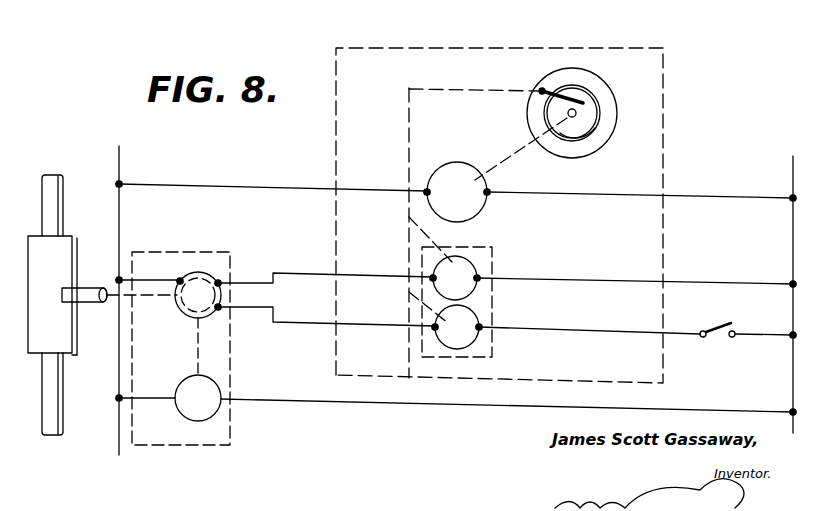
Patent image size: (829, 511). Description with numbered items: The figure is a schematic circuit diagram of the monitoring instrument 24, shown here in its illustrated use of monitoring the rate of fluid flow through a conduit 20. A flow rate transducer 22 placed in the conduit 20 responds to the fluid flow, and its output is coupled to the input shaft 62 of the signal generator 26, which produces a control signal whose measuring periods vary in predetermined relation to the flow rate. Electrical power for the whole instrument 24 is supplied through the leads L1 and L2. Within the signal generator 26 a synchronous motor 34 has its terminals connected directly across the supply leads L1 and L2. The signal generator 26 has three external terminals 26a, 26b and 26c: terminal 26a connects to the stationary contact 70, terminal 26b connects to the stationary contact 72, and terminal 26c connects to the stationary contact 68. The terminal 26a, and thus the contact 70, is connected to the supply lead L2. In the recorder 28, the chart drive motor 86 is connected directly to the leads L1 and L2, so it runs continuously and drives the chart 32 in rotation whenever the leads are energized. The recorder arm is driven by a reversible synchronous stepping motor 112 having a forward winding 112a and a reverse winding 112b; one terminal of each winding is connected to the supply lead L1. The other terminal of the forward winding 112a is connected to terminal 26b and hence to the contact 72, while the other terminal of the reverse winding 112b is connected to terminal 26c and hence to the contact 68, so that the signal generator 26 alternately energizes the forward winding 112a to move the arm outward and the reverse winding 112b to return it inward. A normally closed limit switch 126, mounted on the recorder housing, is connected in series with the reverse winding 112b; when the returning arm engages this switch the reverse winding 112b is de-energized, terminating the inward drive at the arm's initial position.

The conduit 20 is at (49, 199).
The flow rate transducer 22 is at (40, 332).
The monitoring instrument 24 is at (312, 180).
The signal generator 26 is at (275, 357).
The terminal 26a is at (168, 270).
The stationary contact 70 is at (165, 278).
The terminal 26b is at (325, 255).
The stationary contact 72 is at (236, 282).
The terminal 26c is at (326, 333).
The stationary contact 68 is at (236, 309).
The recorder 28 is at (631, 50).
The chart 32 is at (608, 147).
The synchronous motor 34 is at (215, 413).
The input shaft 62 is at (110, 303).
The chart drive motor 86 is at (495, 170).
The reversible synchronous stepping motor 112 is at (487, 294).
The forward winding 112a is at (472, 292).
The reverse winding 112b is at (474, 341).
The limit switch 126 is at (724, 339).
The supply lead L1 is at (793, 285).
The supply lead L2 is at (119, 292).